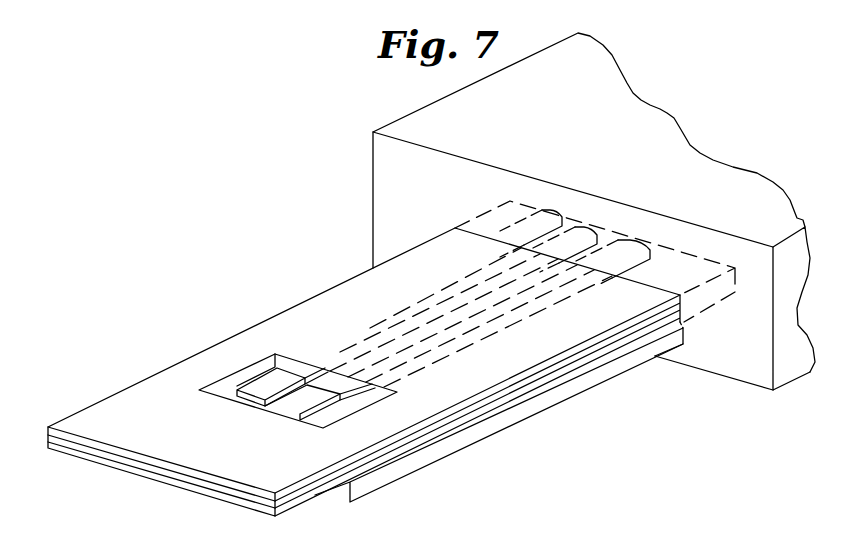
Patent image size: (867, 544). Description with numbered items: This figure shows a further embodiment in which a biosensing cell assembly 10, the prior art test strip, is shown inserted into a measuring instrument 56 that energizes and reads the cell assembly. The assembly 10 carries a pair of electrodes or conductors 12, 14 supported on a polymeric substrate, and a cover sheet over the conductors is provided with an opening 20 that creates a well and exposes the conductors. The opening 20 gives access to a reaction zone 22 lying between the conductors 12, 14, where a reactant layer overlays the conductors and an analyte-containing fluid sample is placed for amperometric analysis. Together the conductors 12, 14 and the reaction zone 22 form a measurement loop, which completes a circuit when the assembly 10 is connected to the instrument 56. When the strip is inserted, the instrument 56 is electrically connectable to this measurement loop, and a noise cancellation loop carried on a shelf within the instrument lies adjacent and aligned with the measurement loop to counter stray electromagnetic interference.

The biosensor cell assembly 10 is at (232, 333).
The conductor 12 is at (237, 381).
The conductor 14 is at (345, 412).
The opening 20 is at (315, 385).
The reaction zone 22 is at (291, 399).
The measuring instrument 56 is at (436, 198).